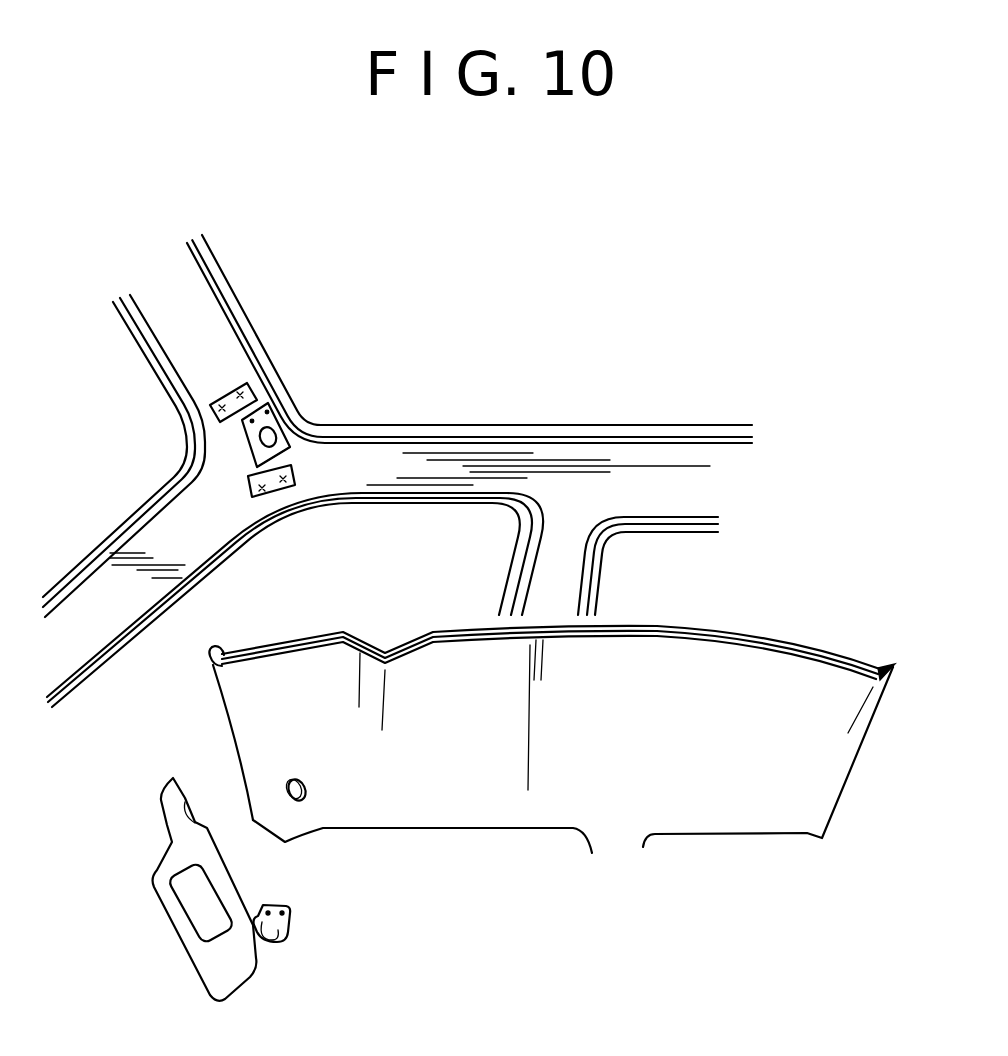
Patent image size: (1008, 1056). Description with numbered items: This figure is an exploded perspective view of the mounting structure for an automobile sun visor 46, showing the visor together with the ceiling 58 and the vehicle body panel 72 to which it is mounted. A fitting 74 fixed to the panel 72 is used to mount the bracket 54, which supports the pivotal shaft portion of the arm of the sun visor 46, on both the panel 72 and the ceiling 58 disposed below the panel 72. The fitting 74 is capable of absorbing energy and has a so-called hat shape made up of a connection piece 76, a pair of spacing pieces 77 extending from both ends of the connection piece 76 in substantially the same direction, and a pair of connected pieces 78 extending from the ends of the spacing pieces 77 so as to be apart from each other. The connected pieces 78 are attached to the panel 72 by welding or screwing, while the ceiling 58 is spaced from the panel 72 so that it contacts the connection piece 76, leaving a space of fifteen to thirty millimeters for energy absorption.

The sun visor 46 is at (168, 862).
The bracket 54 is at (292, 917).
The ceiling 58 is at (812, 782).
The panel 72 is at (522, 463).
The fitting 74 is at (295, 436).
The connection piece 76 is at (245, 441).
The spacing pieces 77 is at (258, 402).
The connected pieces 78 is at (238, 395).